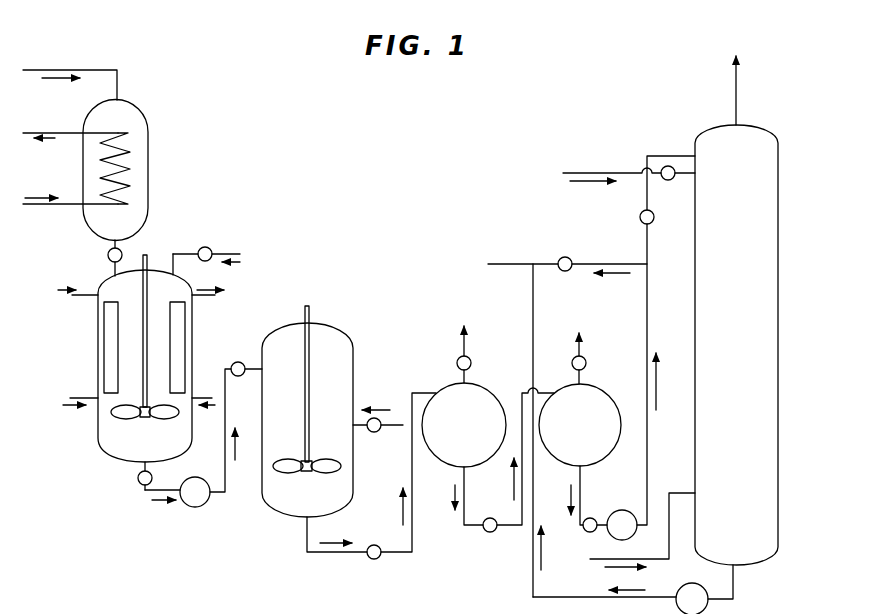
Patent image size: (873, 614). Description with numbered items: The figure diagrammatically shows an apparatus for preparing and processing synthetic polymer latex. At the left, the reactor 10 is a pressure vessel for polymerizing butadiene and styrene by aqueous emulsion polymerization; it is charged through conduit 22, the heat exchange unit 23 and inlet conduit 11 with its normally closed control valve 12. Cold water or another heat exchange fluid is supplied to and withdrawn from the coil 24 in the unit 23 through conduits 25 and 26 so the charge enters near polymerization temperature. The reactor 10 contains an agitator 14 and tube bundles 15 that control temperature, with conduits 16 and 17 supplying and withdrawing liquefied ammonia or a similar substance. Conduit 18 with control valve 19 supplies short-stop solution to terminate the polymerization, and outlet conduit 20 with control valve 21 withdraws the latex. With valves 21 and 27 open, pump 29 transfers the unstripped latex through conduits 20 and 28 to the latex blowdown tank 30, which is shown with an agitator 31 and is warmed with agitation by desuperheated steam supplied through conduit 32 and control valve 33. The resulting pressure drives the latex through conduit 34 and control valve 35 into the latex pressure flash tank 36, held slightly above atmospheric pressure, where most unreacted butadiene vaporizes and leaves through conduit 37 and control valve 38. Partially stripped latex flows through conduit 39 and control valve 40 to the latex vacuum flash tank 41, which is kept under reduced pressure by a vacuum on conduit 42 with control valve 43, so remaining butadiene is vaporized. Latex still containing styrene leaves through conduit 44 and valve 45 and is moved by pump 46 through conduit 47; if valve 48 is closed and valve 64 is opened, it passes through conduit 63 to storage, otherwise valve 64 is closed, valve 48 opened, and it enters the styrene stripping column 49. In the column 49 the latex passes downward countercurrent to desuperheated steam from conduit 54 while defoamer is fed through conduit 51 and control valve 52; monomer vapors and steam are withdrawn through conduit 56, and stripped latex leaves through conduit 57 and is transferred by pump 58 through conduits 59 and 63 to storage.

The reactor 10 is at (193, 331).
The inlet conduit 11 is at (114, 272).
The control valve 12 is at (108, 257).
The agitator 14 is at (143, 357).
The tube bundles 15 is at (104, 350).
The conduit 16 is at (85, 392).
The conduit 17 is at (76, 296).
The conduit 18 is at (172, 253).
The control valve 19 is at (206, 263).
The outlet conduit 20 is at (140, 465).
The control valve 21 is at (137, 485).
The conduit 22 is at (118, 86).
The heat exchange unit 23 is at (148, 154).
The coil 24 is at (132, 191).
The conduit 25 is at (63, 210).
The conduit 26 is at (60, 131).
The valve 27 is at (246, 361).
The conduit 28 is at (226, 477).
The pump 29 is at (205, 505).
The latex blowdown tank 30 is at (354, 363).
The agitator 31 is at (310, 384).
The conduit 32 is at (388, 421).
The control valve 33 is at (382, 432).
The conduit 34 is at (305, 528).
The control valve 35 is at (375, 545).
The latex pressure flash tank 36 is at (486, 393).
The conduit 37 is at (471, 372).
The control valve 38 is at (457, 357).
The conduit 39 is at (478, 529).
The control valve 40 is at (489, 518).
The latex vacuum flash tank 41 is at (609, 397).
The conduit 42 is at (587, 375).
The control valve 43 is at (572, 358).
The conduit 44 is at (583, 505).
The valve 45 is at (586, 532).
The pump 46 is at (625, 510).
The conduit 47 is at (648, 471).
The valve 48 is at (640, 218).
The styrene stripping column 49 is at (694, 264).
The conduit 51 is at (565, 176).
The control valve 52 is at (665, 181).
The conduit 54 is at (668, 523).
The conduit 56 is at (738, 98).
The conduit 57 is at (738, 575).
The pump 58 is at (686, 587).
The conduit 59 is at (553, 597).
The conduit 63 is at (523, 267).
The valve 64 is at (567, 272).